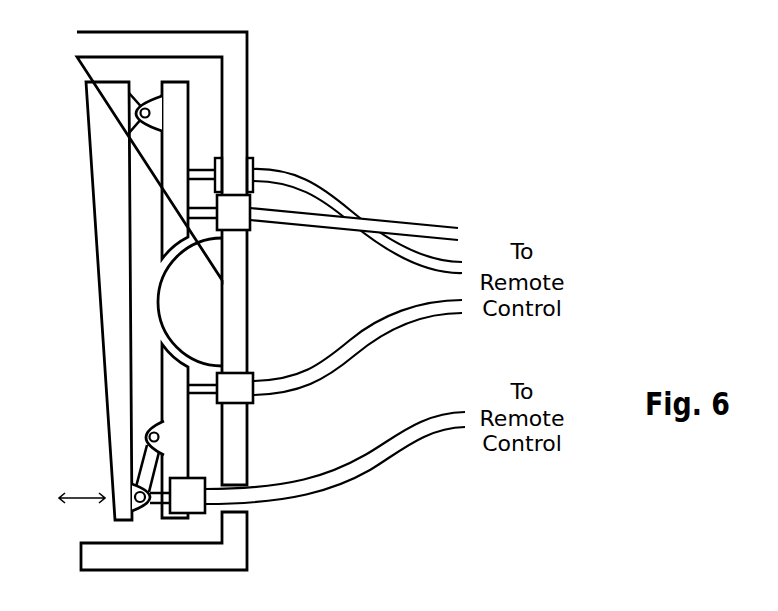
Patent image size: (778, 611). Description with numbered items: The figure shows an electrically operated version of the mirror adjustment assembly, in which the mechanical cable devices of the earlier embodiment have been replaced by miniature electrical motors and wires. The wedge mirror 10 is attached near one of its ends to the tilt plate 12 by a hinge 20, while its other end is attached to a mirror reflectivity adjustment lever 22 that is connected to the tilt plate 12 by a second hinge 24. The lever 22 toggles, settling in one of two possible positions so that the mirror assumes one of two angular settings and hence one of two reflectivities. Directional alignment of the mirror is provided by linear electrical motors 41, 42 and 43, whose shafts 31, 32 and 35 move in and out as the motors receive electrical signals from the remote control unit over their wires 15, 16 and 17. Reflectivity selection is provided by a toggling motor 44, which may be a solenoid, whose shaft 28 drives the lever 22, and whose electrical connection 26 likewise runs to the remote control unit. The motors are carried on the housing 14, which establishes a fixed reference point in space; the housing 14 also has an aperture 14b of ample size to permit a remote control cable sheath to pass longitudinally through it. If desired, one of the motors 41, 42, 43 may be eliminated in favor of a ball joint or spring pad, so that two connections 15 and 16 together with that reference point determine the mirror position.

The wedge mirror 10 is at (113, 281).
The tilt plate 12 is at (152, 118).
The housing 14 is at (238, 553).
The aperture 14b is at (250, 487).
The electrical connection 15 is at (385, 227).
The electrical connection 16 is at (388, 253).
The electrical connection 17 is at (368, 335).
The hinge 20 is at (180, 100).
The mirror reflectivity adjustment lever 22 is at (148, 467).
The second hinge 24 is at (152, 427).
The electrical connection 26 is at (393, 445).
The shaft 28 is at (153, 507).
The shaft 31 is at (198, 218).
The shaft 32 is at (197, 167).
The shaft 35 is at (203, 392).
The linear electrical motor 41 is at (230, 222).
The linear electrical motor 42 is at (252, 157).
The linear electrical motor 43 is at (230, 378).
The toggling motor 44 is at (190, 502).